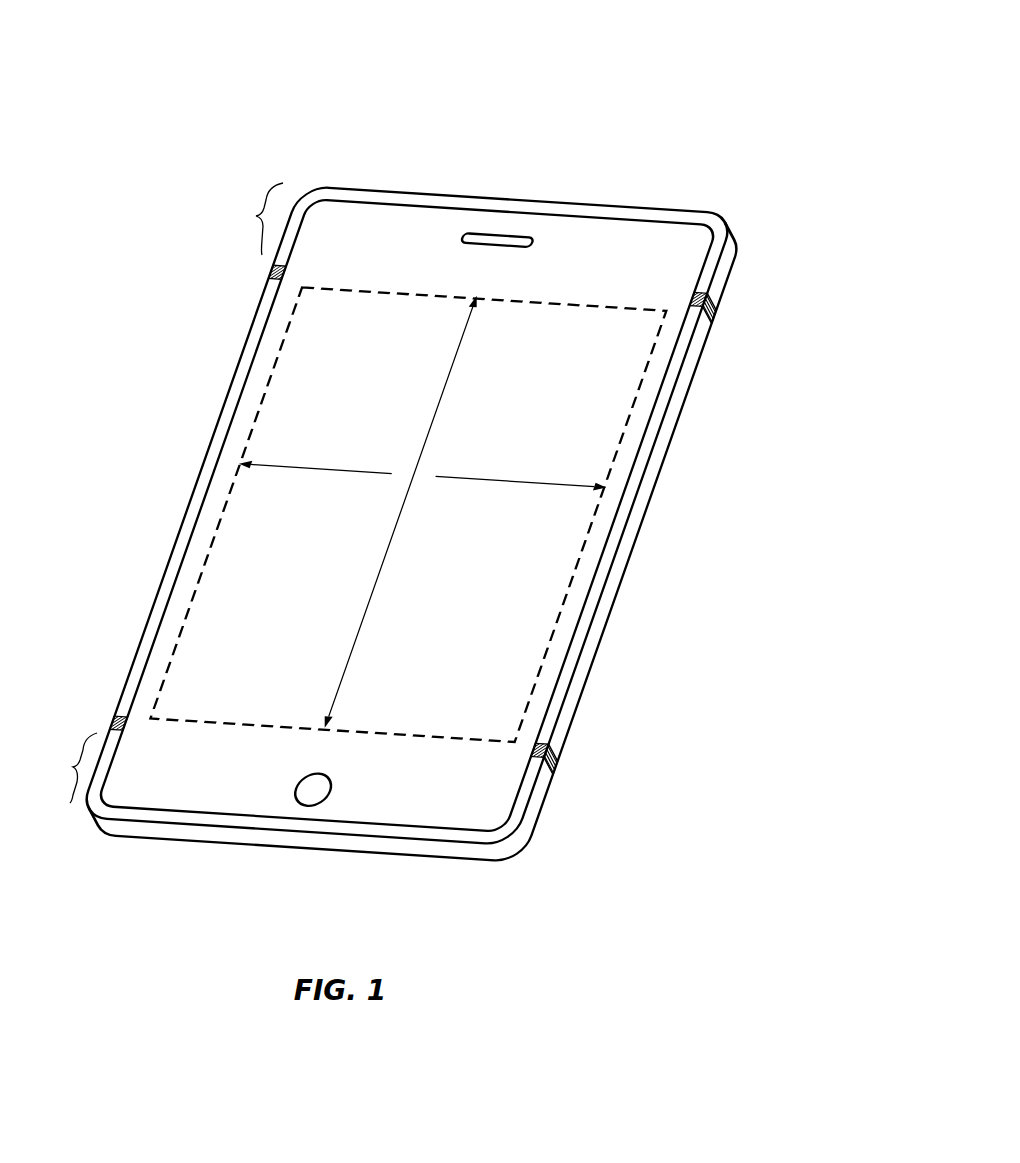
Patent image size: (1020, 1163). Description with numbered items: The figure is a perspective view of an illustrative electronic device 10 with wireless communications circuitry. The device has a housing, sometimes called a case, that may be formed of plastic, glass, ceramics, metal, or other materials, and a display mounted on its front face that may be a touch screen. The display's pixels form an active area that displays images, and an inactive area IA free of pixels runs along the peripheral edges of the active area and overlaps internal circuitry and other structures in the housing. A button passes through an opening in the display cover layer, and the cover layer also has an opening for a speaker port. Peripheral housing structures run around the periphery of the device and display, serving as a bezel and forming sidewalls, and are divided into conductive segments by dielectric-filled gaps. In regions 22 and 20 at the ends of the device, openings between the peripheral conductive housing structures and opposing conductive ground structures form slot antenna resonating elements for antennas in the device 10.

The electronic device 10 is at (690, 58).
The region 20 is at (72, 768).
The region 22 is at (259, 219).
The inactive area IA is at (632, 242).